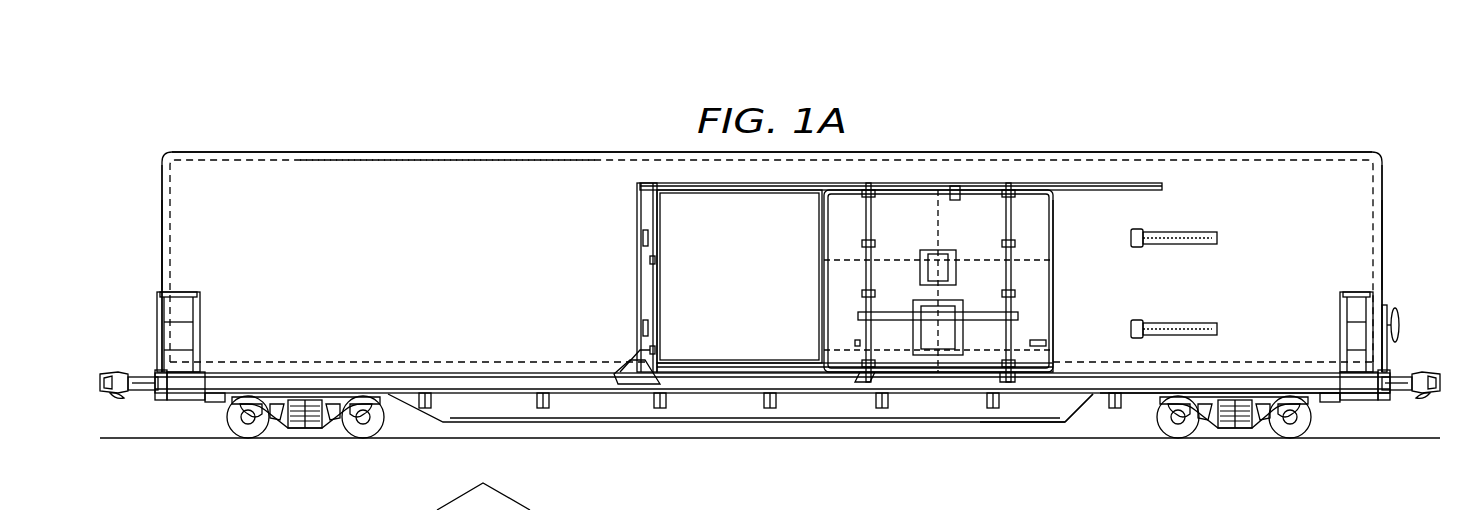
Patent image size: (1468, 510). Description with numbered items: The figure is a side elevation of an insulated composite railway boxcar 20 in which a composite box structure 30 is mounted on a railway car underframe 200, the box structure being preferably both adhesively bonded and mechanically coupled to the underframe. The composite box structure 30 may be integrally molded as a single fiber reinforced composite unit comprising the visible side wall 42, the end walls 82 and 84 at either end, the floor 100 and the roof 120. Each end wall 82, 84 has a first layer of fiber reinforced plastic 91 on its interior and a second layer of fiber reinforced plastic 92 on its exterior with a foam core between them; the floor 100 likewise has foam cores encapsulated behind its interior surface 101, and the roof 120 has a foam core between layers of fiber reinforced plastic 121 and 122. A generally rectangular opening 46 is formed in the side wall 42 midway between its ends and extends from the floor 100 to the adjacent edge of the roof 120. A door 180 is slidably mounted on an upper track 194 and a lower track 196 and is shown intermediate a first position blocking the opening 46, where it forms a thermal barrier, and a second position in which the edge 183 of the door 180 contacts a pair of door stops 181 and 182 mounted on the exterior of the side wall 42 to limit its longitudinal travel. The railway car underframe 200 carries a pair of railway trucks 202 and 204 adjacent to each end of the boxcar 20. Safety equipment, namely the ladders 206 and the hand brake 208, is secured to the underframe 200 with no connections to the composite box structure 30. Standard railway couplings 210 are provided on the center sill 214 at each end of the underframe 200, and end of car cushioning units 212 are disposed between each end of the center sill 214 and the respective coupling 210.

The insulated composite railway boxcar 20 is at (1282, 124).
The composite box structure 30 is at (1068, 140).
The side wall 42 is at (352, 183).
The opening 46 is at (717, 289).
The end wall 82 is at (1386, 176).
The end wall 84 is at (157, 176).
The first layer of fiber reinforced plastic 91 is at (172, 235).
The second layer of fiber reinforced plastic 92 is at (162, 235).
The floor 100 is at (410, 362).
The interior surface 101 is at (1252, 362).
The roof 120 is at (537, 151).
The layer of fiber reinforced plastic 121 is at (440, 164).
The layer of fiber reinforced plastic 122 is at (440, 152).
The door 180 is at (882, 230).
The door stop 181 is at (1203, 232).
The door stop 182 is at (1203, 323).
The edge of door 183 is at (1054, 283).
The upper track 194 is at (1125, 183).
The lower track 196 is at (1094, 398).
The railway car underframe 200 is at (931, 425).
The railway truck 202 is at (1237, 430).
The railway truck 204 is at (305, 430).
The ladder 206 is at (183, 292).
The hand brake 208 is at (1398, 316).
The railway coupling 210 is at (116, 398).
The end of car cushioning unit 212 is at (136, 391).
The center sill 214 is at (1058, 412).